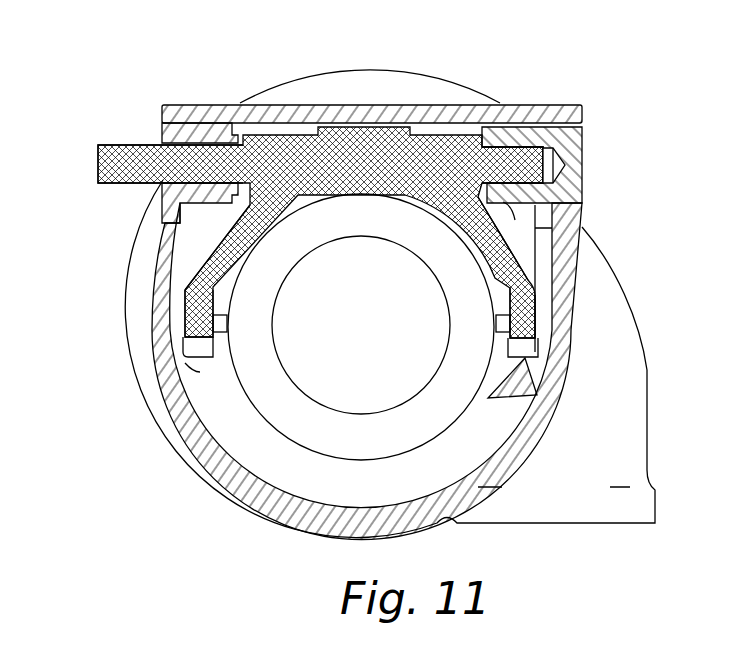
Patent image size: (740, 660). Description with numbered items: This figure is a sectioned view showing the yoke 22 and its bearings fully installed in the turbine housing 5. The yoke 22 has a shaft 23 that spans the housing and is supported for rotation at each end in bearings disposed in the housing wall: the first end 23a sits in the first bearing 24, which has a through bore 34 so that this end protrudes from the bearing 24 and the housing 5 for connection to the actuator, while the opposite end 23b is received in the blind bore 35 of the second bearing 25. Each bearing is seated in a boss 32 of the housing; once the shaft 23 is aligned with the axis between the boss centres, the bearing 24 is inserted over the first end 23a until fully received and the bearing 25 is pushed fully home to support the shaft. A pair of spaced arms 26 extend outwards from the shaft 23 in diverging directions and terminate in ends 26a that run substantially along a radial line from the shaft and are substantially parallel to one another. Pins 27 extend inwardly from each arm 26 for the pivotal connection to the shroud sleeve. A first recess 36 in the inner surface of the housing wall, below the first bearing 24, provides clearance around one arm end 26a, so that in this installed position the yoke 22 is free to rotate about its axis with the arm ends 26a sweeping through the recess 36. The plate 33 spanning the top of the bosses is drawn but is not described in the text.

The turbine housing 5 is at (129, 340).
The yoke 22 is at (522, 239).
The shaft 23 is at (280, 148).
The first end 23a is at (108, 152).
The opposite end 23b is at (537, 146).
The first bearing 24 is at (165, 189).
The second bearing 25 is at (578, 178).
The arms 26 is at (203, 257).
The arm ends 26a is at (187, 313).
The pins 27 is at (497, 327).
The boss 32 is at (530, 375).
The cover plate 33 is at (200, 118).
The through bore 34 is at (163, 126).
The blind bore 35 is at (510, 146).
The first recess 36 is at (177, 337).